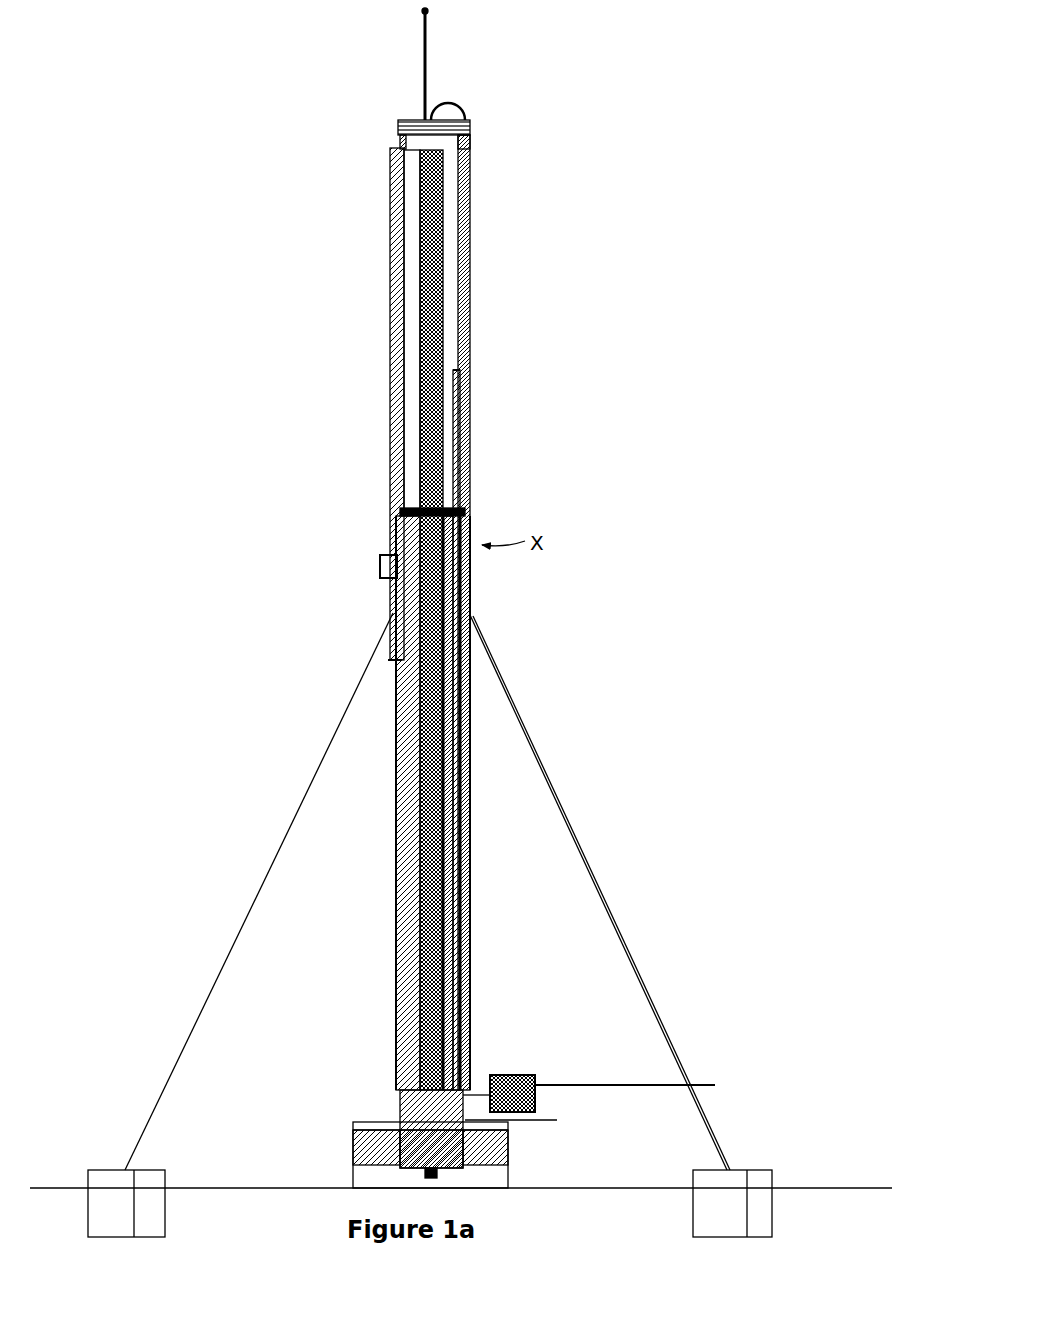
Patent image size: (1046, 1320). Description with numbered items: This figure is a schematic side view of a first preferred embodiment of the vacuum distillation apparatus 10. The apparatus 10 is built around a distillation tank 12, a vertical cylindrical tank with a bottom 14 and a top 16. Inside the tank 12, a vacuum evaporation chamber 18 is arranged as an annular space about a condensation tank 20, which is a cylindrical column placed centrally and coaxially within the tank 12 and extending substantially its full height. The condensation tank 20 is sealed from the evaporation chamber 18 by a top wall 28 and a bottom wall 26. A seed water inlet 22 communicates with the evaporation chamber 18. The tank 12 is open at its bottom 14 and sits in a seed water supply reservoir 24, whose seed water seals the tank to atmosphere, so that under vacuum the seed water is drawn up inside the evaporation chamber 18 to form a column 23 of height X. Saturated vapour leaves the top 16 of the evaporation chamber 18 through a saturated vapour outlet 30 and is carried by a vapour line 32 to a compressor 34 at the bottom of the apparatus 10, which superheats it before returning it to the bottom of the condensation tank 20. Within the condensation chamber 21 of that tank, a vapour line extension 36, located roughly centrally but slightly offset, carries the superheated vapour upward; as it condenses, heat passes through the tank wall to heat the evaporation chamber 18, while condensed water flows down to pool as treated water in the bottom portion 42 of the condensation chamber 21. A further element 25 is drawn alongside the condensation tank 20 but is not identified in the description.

The vacuum distillation apparatus 10 is at (288, 294).
The distillation tank 12 is at (398, 373).
The bottom 14 is at (303, 1127).
The top 16 is at (350, 141).
The vacuum evaporation chamber 18 is at (418, 455).
The condensation tank 20 is at (400, 509).
The condensation chamber 21 is at (397, 840).
The seed water inlet 22 is at (510, 1155).
The column 23 is at (397, 741).
The seed water supply reservoir 24 is at (352, 1148).
The rod 25 is at (475, 378).
The bottom wall 26 is at (398, 1105).
The top wall 28 is at (445, 152).
The saturated vapour outlet 30 is at (440, 116).
The vapour line 32 is at (452, 100).
The compressor 34 is at (515, 1076).
The vapour line extension 36 is at (397, 885).
The bottom portion 42 is at (397, 970).